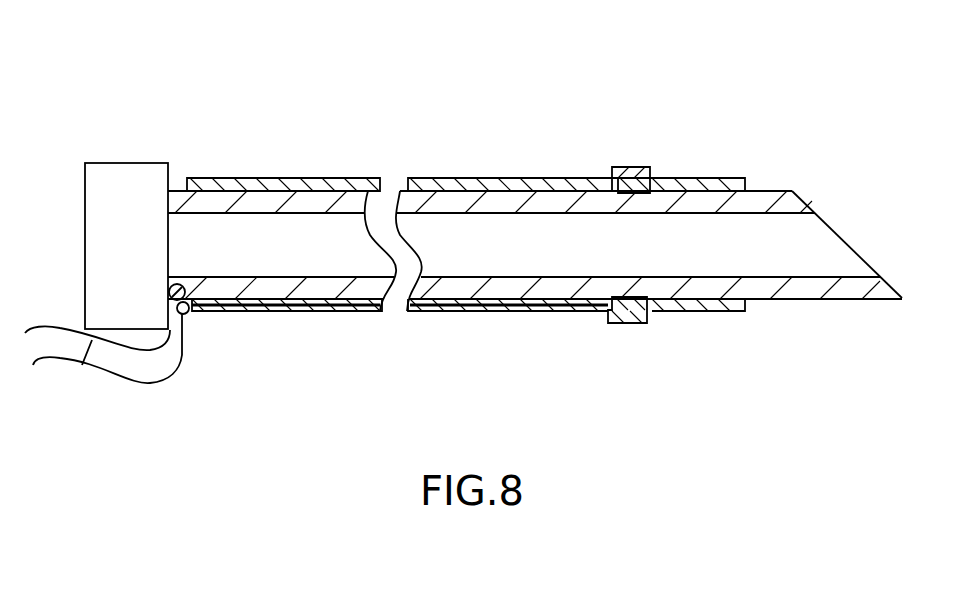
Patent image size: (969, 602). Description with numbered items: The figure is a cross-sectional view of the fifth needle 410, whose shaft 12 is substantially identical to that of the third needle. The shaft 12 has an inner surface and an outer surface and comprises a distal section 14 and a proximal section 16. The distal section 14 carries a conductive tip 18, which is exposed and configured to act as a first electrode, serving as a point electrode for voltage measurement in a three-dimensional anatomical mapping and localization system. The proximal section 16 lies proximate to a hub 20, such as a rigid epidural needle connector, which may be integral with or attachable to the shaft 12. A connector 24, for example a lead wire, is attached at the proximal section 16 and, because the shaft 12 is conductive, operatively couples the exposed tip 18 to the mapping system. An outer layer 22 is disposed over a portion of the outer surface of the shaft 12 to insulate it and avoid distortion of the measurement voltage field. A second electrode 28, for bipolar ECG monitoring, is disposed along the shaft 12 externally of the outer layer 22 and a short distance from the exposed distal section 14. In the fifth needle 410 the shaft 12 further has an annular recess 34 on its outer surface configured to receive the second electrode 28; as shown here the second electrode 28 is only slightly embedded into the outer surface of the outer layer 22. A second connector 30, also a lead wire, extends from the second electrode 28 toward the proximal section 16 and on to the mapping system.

The fifth needle 410 is at (462, 96).
The shaft 12 is at (757, 188).
The distal section 14 is at (763, 189).
The proximal section 16 is at (180, 189).
The conductive tip 18 is at (850, 245).
The hub 20 is at (85, 236).
The outer layer 22 is at (502, 188).
The connector 24 is at (82, 365).
The second electrode 28 is at (612, 323).
The second connector 30 is at (143, 384).
The recess 34 is at (627, 185).